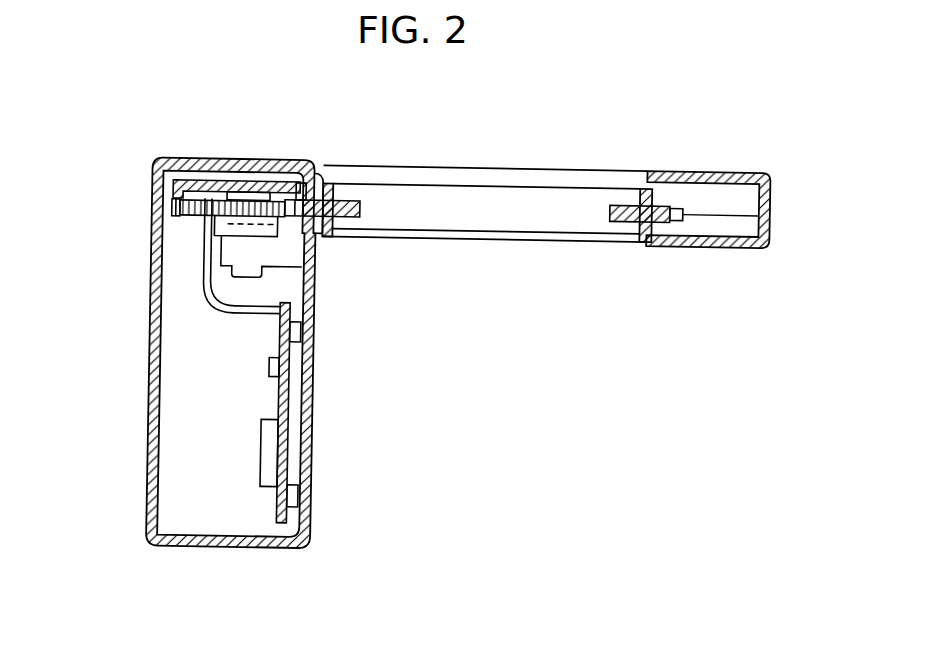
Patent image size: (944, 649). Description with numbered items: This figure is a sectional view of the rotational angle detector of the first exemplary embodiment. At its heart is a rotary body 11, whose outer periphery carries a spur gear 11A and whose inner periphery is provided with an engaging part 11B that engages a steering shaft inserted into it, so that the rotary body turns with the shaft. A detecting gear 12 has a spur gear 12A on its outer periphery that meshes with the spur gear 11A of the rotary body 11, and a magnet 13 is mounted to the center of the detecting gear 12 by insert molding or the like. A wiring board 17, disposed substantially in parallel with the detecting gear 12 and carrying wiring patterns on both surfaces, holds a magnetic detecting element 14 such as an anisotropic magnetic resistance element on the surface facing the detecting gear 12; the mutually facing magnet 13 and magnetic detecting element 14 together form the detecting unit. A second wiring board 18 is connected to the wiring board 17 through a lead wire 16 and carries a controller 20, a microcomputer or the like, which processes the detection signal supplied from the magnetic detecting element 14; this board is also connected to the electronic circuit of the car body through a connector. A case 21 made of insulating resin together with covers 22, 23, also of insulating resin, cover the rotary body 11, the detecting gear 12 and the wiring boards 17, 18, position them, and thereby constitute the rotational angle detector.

The rotary body 11 is at (537, 183).
The spur gear 11A is at (302, 175).
The engaging part 11B is at (620, 222).
The detecting gear 12 is at (217, 225).
The spur gear 12A is at (176, 210).
The magnet 13 is at (255, 225).
The magnetic detecting element 14 is at (257, 193).
The lead wire 16 is at (205, 297).
The wiring board 17 is at (212, 183).
The wiring board 18 is at (292, 387).
The controller 20 is at (265, 487).
The case 21 is at (315, 497).
The cover 22 is at (698, 168).
The cover 23 is at (150, 425).